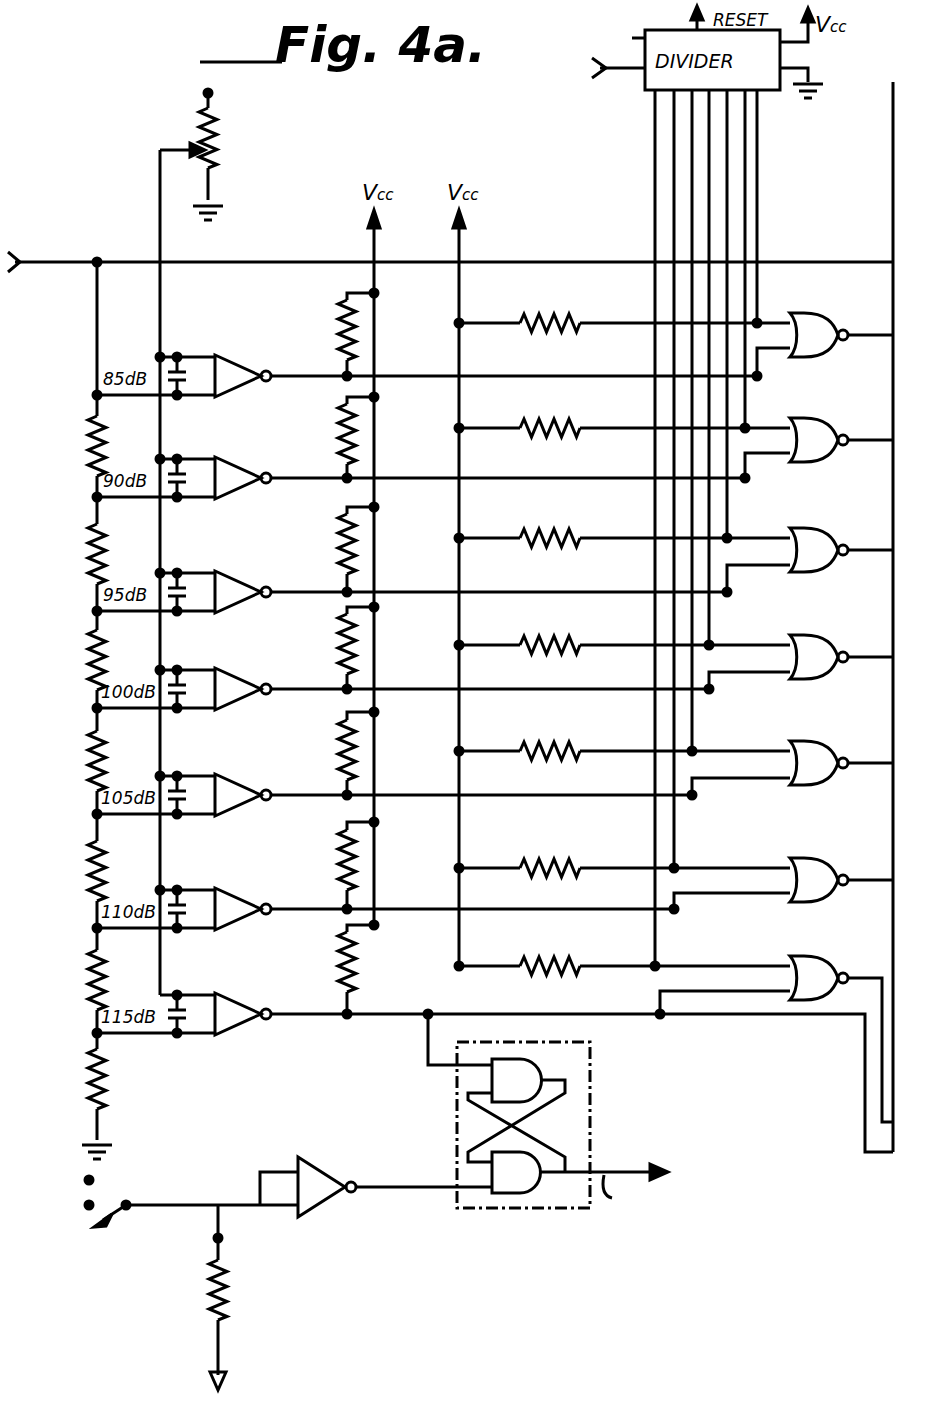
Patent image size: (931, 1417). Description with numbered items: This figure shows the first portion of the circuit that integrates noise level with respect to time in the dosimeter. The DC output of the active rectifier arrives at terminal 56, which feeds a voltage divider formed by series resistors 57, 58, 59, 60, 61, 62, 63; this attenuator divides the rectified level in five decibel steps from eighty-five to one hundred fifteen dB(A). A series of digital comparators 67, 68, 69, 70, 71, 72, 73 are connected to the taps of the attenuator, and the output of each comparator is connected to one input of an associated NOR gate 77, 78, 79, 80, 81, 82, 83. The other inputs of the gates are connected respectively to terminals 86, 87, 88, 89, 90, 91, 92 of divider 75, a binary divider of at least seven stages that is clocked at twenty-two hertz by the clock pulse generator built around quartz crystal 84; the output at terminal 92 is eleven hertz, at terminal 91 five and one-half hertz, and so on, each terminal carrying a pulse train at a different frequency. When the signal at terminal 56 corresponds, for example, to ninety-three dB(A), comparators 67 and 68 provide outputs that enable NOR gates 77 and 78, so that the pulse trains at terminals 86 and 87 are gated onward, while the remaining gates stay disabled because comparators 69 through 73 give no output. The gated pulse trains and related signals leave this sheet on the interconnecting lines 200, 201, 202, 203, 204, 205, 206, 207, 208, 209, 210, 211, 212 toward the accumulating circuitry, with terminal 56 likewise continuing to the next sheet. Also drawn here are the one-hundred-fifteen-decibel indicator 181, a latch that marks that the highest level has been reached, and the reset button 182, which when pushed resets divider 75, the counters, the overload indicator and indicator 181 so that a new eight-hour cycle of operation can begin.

The terminal 56 is at (22, 262).
The resistor 57 is at (92, 438).
The resistor 58 is at (92, 548).
The resistor 59 is at (92, 662).
The resistor 60 is at (92, 772).
The resistor 61 is at (92, 878).
The resistor 62 is at (92, 988).
The resistor 63 is at (92, 1088).
The digital comparator 67 is at (236, 390).
The digital comparator 68 is at (236, 492).
The digital comparator 69 is at (236, 606).
The digital comparator 70 is at (236, 703).
The digital comparator 71 is at (236, 809).
The digital comparator 72 is at (236, 923).
The digital comparator 73 is at (238, 1027).
The divider 75 is at (632, 38).
The quartz crystal 84 is at (606, 76).
The terminal 86 is at (757, 92).
The terminal 87 is at (745, 92).
The terminal 88 is at (727, 92).
The terminal 89 is at (709, 92).
The terminal 90 is at (692, 92).
The terminal 91 is at (674, 92).
The terminal 92 is at (655, 95).
The NOR gate 77 is at (812, 357).
The NOR gate 78 is at (815, 462).
The NOR gate 79 is at (820, 572).
The NOR gate 80 is at (812, 640).
The NOR gate 81 is at (832, 745).
The NOR gate 82 is at (802, 858).
The NOR gate 83 is at (830, 960).
The interconnecting line 200 is at (854, 330).
The interconnecting line 201 is at (856, 432).
The interconnecting line 202 is at (820, 480).
The interconnecting line 203 is at (866, 545).
The interconnecting line 204 is at (790, 600).
The interconnecting line 205 is at (866, 652).
The interconnecting line 206 is at (832, 690).
The interconnecting line 207 is at (856, 766).
The interconnecting line 208 is at (780, 800).
The interconnecting line 209 is at (866, 866).
The interconnecting line 210 is at (770, 915).
The interconnecting line 211 is at (892, 975).
The interconnecting line 212 is at (838, 1020).
The 115 dB indicator 181 is at (590, 1087).
The reset button 182 is at (115, 1215).